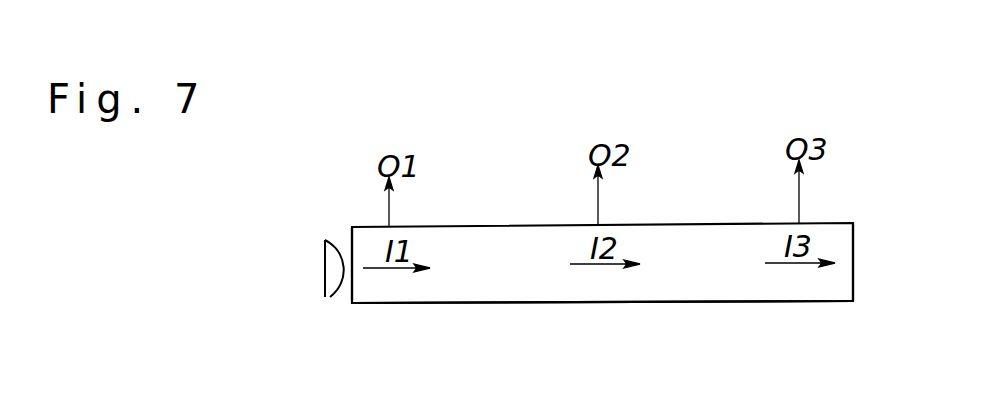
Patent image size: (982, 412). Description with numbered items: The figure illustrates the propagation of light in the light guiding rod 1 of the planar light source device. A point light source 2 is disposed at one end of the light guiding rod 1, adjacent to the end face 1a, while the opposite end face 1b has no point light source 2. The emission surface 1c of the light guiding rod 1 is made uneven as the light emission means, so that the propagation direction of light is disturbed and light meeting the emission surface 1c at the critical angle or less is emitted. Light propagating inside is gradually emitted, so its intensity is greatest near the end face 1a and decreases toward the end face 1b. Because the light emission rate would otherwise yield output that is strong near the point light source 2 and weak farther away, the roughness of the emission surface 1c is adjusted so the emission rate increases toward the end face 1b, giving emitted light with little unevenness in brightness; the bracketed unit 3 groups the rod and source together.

The light guiding rod 1 is at (428, 292).
The end face 1a is at (351, 245).
The end face 1b is at (854, 263).
The emission surface 1c is at (670, 303).
The point light source 2 is at (335, 287).
The light emitting unit 3 is at (425, 374).